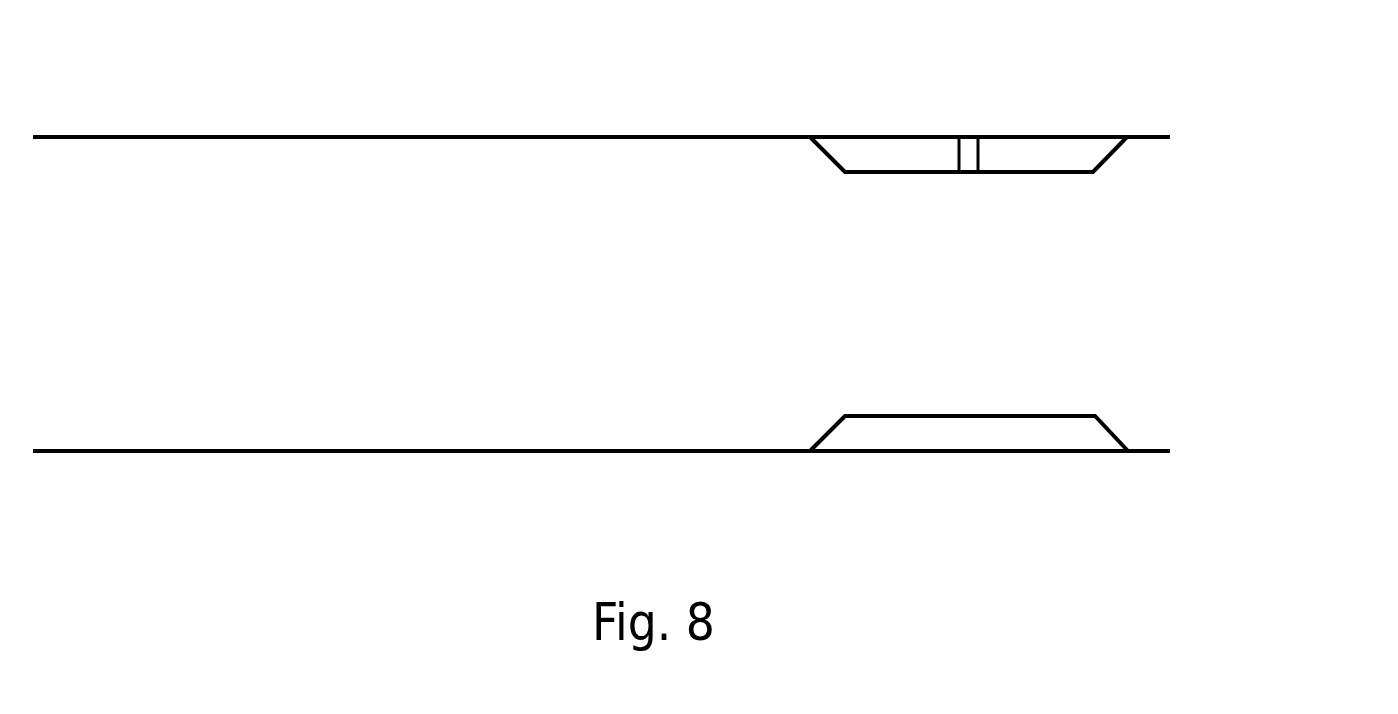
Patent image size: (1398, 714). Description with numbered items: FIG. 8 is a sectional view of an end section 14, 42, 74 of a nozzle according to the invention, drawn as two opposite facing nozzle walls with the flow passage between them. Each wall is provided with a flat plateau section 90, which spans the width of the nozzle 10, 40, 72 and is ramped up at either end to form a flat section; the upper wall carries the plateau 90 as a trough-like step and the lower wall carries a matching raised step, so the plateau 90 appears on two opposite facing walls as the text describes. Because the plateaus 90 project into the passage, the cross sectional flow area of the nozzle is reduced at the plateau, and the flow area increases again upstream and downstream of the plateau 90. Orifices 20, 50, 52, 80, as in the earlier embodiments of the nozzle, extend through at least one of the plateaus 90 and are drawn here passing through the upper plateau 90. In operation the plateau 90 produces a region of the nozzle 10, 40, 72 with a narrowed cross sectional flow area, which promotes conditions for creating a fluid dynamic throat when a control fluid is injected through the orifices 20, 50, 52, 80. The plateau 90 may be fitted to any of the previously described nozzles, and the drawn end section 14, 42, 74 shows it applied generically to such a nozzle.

The nozzle 10 is at (601, 83).
The nozzle 40 is at (601, 83).
The first surface 72 is at (258, 85).
The orifice 20 is at (1040, 106).
The orifice 50 is at (1040, 106).
The orifice 52 is at (1040, 106).
The orifice 80 is at (1015, 93).
The flat plateau section 90 is at (835, 150).
The end section 14 is at (705, 345).
The end section 42 is at (705, 345).
The end section 74 is at (1132, 293).